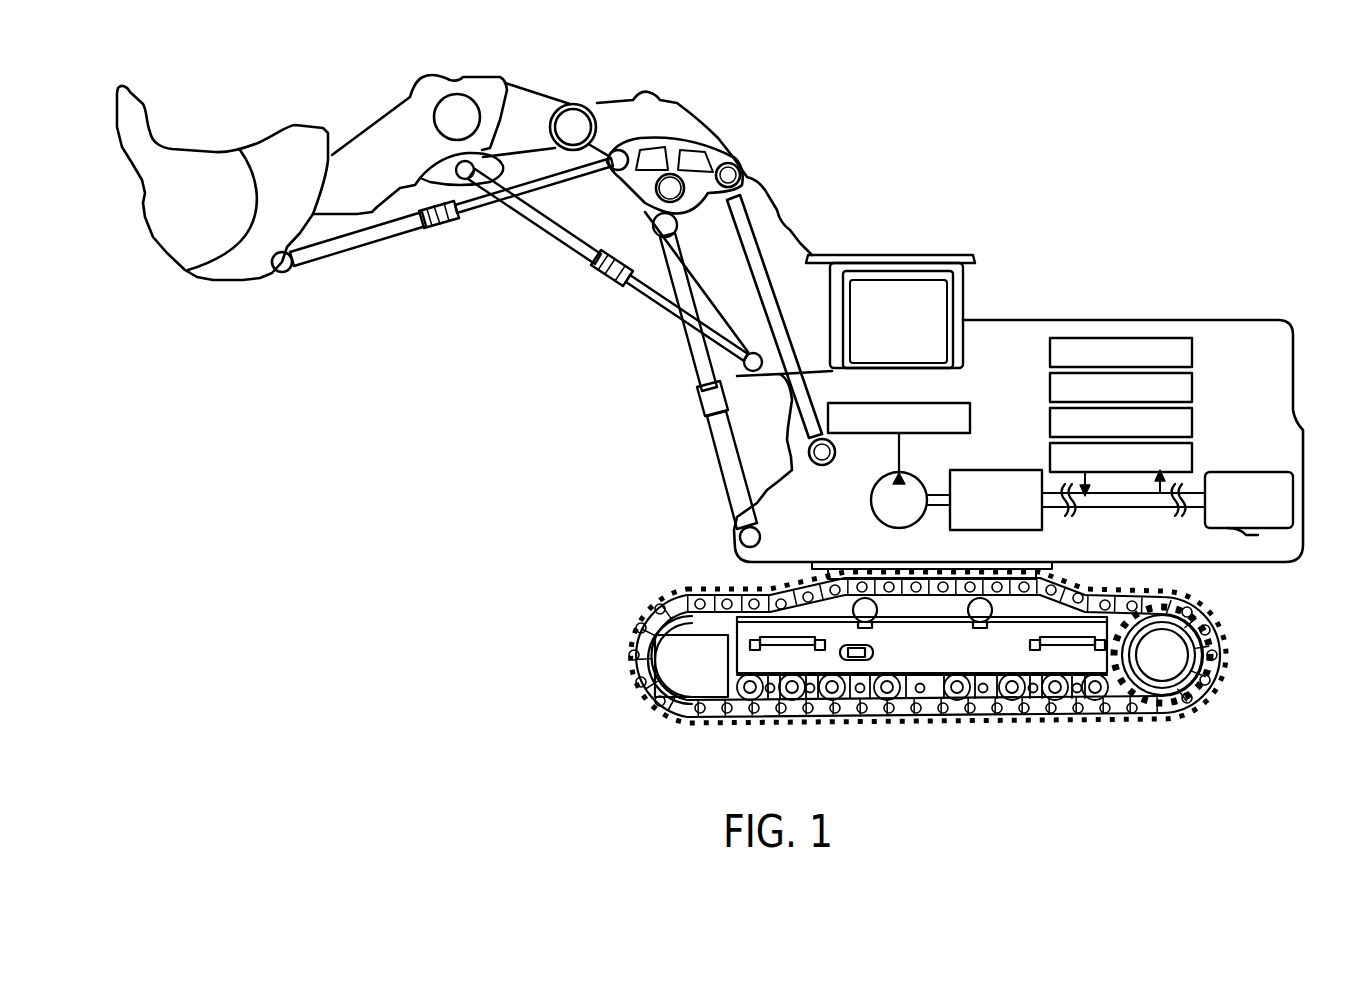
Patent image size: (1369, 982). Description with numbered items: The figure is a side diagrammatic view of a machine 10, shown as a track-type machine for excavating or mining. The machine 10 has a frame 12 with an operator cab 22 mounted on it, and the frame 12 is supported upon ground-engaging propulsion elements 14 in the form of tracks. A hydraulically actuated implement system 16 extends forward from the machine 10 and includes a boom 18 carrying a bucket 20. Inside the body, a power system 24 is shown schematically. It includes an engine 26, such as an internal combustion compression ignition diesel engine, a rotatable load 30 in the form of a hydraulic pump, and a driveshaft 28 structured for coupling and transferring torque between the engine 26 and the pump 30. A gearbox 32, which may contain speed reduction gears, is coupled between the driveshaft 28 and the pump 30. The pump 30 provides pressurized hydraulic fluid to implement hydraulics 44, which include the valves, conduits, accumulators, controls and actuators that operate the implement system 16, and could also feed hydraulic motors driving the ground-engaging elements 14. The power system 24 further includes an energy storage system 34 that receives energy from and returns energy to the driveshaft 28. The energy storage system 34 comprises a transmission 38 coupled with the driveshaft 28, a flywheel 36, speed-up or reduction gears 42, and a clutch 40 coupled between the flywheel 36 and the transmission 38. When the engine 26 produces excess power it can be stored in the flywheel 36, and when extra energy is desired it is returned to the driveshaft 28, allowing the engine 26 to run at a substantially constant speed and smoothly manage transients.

The machine 10 is at (1303, 301).
The frame 12 is at (1263, 565).
The ground-engaging propulsion elements 14 is at (1222, 655).
The hydraulically actuated implement system 16 is at (562, 302).
The boom 18 is at (748, 177).
The bucket 20 is at (215, 282).
The operator cab 22 is at (973, 264).
The power system 24 is at (1279, 436).
The engine 26 is at (1294, 495).
The driveshaft 28 is at (1125, 508).
The rotatable load (pump) 30 is at (868, 496).
The gearbox 32 is at (1005, 472).
The energy storage system 34 is at (1218, 387).
The flywheel 36 is at (1050, 342).
The transmission 38 is at (1192, 447).
The clutch 40 is at (1192, 413).
The gears 42 is at (1050, 380).
The implement hydraulics 44 is at (920, 433).